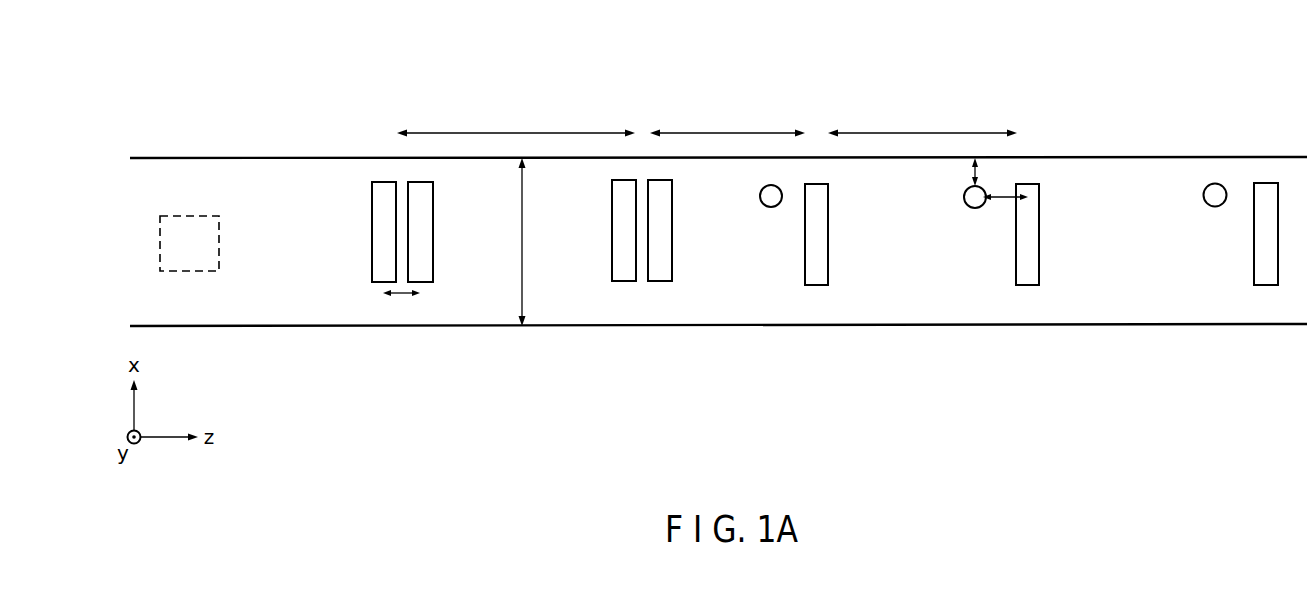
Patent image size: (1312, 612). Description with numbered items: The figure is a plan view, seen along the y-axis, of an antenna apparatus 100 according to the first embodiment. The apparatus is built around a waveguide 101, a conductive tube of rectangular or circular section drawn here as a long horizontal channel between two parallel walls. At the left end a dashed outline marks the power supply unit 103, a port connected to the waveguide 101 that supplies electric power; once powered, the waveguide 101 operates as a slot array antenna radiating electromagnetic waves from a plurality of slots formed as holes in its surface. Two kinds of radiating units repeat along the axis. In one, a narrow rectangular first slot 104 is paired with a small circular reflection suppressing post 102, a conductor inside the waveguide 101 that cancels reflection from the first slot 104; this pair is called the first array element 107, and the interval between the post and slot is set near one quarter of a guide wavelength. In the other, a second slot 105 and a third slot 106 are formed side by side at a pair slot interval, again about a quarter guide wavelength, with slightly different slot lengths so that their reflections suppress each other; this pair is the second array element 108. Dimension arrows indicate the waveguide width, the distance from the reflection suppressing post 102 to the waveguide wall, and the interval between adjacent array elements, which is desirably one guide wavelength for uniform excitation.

The antenna apparatus 100 is at (766, 67).
The waveguide 101 is at (1137, 158).
The reflection suppressing post 102 is at (975, 208).
The power supply unit 103 is at (160, 244).
The first slot 104 is at (1027, 280).
The second slot 105 is at (431, 282).
The third slot 106 is at (378, 282).
The first array element 107 is at (951, 360).
The second array element 108 is at (352, 362).